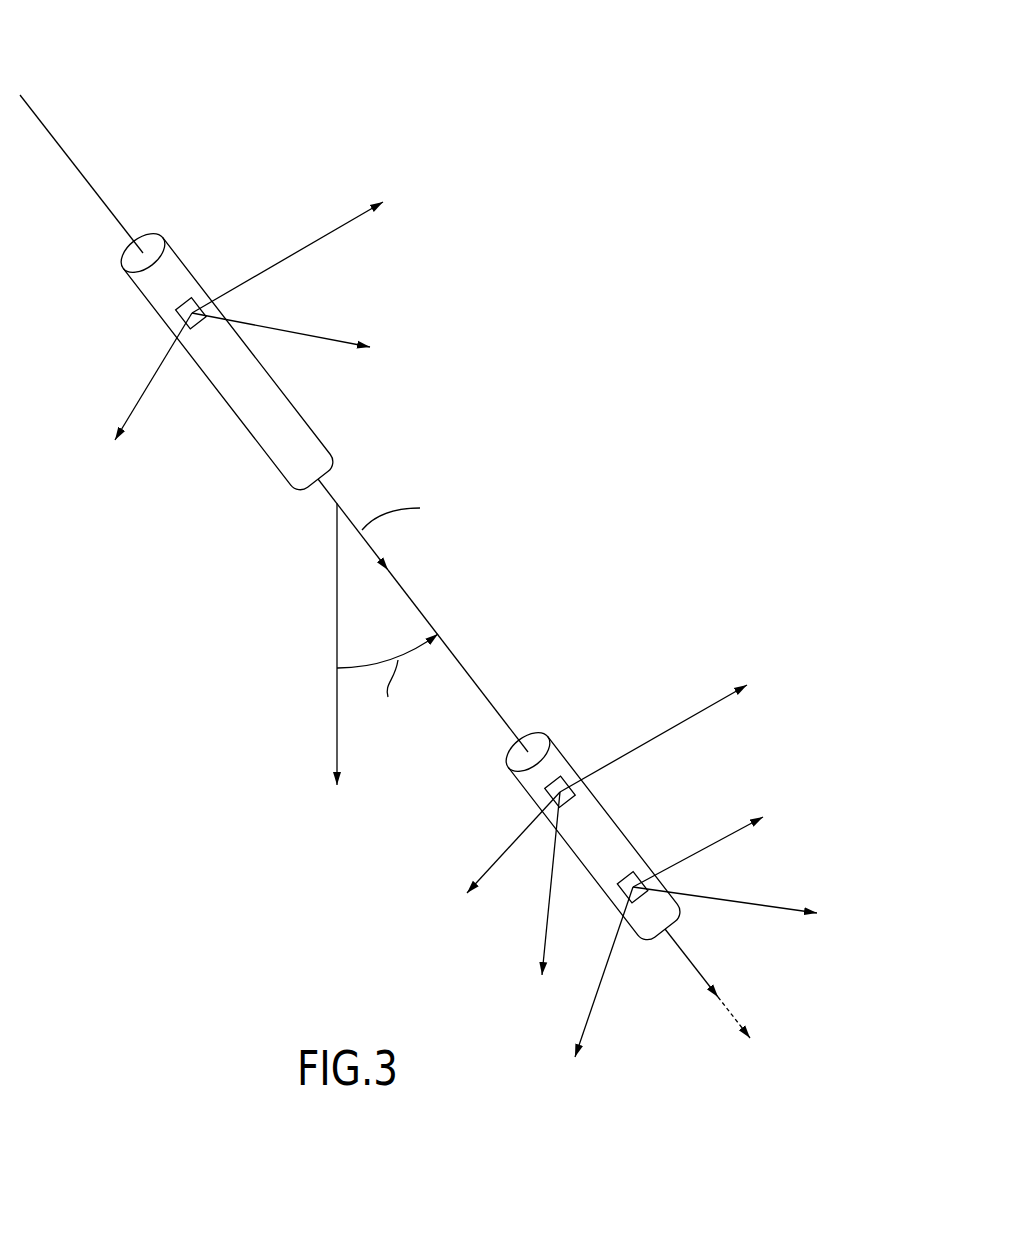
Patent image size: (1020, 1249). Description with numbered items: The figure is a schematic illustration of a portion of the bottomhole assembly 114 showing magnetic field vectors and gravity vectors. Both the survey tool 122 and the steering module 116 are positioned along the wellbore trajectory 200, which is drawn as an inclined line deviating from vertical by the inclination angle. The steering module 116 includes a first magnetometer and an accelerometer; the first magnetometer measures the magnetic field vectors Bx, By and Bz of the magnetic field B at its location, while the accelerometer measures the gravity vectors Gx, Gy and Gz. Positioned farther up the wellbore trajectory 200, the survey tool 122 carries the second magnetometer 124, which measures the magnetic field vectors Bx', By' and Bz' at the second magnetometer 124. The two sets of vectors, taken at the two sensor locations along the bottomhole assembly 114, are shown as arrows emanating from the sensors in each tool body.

The wellbore trajectory 200 is at (38, 117).
The bottomhole assembly 114 is at (802, 502).
The steering module 116 is at (563, 750).
The survey tool 122 is at (168, 243).
The second magnetometer 124 is at (203, 297).